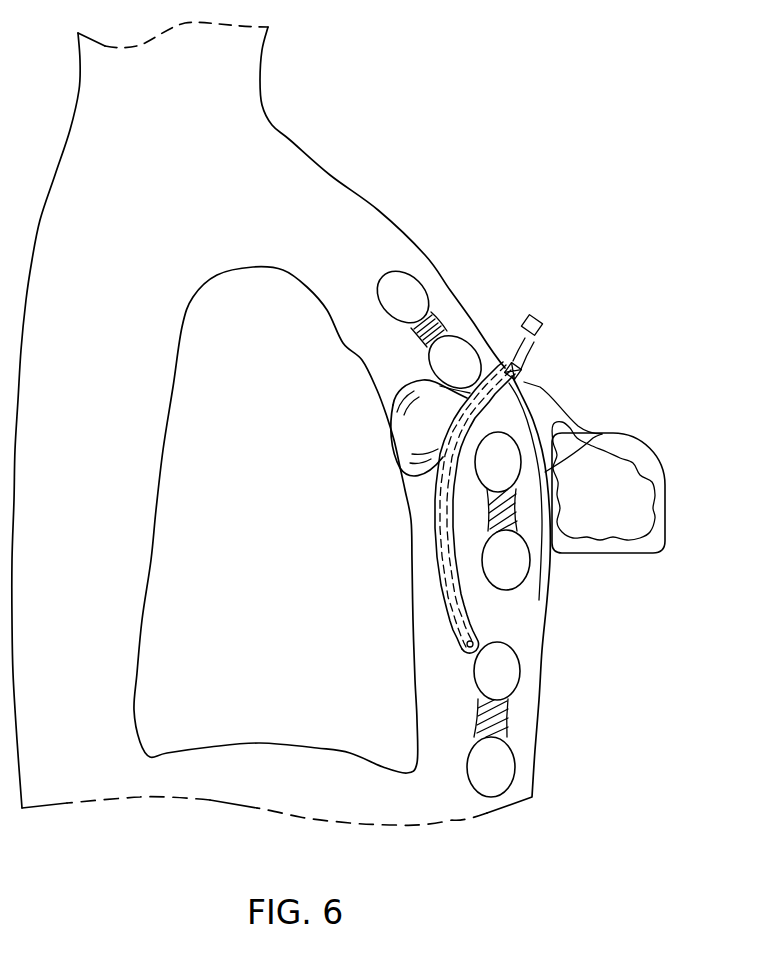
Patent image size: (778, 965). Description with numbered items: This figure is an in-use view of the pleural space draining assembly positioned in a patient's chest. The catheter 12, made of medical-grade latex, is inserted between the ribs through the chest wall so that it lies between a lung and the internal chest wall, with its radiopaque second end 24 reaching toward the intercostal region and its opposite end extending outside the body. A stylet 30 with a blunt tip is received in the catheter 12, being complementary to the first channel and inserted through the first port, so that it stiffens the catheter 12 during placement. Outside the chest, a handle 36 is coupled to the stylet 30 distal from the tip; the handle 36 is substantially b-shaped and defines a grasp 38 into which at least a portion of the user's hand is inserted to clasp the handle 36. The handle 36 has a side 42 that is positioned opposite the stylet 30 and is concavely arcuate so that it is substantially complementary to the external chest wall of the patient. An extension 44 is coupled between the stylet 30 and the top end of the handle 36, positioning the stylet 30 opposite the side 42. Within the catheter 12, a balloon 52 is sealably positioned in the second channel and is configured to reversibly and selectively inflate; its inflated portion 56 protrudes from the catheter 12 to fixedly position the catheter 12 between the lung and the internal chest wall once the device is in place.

The catheter 12 is at (457, 583).
The second end 24 is at (482, 653).
The stylet 30 is at (445, 507).
The handle 36 is at (620, 443).
The grasp 38 is at (623, 511).
The side 42 is at (595, 433).
The extension 44 is at (523, 372).
The balloon 52 is at (442, 388).
The inflated portion 56 is at (420, 398).